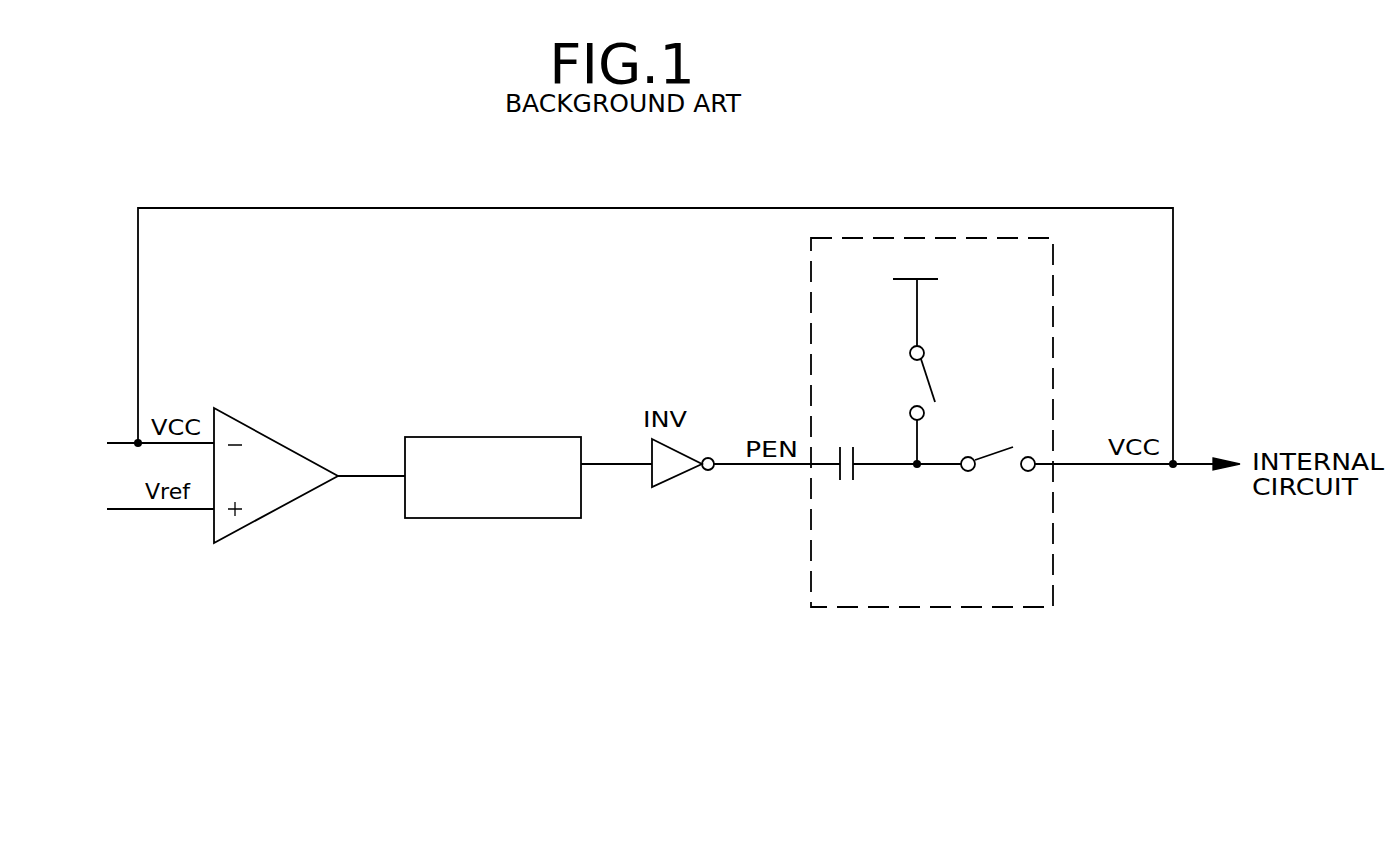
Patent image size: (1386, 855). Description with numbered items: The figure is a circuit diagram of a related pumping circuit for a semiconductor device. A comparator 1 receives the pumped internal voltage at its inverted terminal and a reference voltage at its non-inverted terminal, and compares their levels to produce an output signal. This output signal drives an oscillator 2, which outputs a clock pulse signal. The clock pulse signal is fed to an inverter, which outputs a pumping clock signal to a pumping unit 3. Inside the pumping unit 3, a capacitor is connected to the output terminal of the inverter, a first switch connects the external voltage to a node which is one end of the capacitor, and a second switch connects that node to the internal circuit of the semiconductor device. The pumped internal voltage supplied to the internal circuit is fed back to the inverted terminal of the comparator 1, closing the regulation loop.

The comparator 1 is at (261, 430).
The oscillator 2 is at (581, 518).
The pumping unit 3 is at (1053, 315).